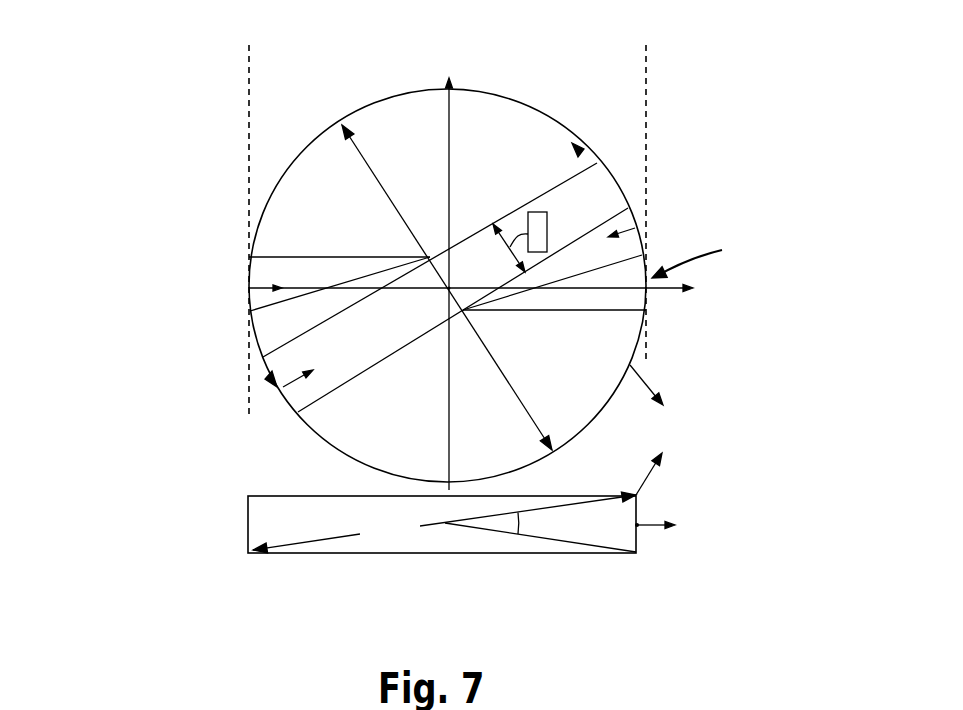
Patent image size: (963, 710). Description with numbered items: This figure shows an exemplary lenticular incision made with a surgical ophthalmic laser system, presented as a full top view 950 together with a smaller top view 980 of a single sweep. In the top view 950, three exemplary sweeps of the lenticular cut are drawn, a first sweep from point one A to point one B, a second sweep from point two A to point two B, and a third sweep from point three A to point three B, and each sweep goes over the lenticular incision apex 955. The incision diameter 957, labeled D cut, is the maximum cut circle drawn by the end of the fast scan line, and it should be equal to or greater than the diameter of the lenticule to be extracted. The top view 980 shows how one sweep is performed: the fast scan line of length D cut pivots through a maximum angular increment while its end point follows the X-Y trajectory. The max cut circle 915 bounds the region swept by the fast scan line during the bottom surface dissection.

The max cut circle 915 is at (298, 183).
The top view 950 is at (150, 414).
The lenticular incision apex 955 is at (455, 282).
The incision diameter 957 is at (371, 162).
The top view of one sweep 980 is at (150, 577).